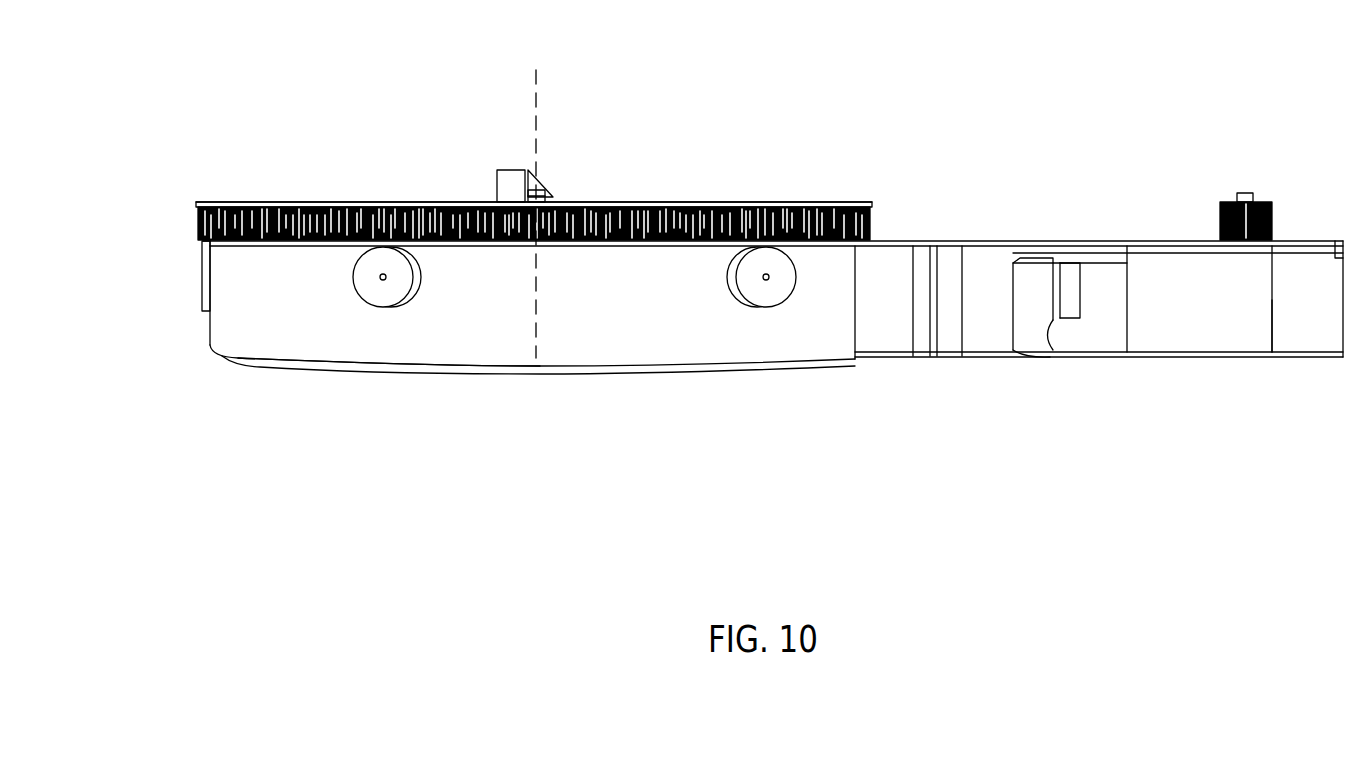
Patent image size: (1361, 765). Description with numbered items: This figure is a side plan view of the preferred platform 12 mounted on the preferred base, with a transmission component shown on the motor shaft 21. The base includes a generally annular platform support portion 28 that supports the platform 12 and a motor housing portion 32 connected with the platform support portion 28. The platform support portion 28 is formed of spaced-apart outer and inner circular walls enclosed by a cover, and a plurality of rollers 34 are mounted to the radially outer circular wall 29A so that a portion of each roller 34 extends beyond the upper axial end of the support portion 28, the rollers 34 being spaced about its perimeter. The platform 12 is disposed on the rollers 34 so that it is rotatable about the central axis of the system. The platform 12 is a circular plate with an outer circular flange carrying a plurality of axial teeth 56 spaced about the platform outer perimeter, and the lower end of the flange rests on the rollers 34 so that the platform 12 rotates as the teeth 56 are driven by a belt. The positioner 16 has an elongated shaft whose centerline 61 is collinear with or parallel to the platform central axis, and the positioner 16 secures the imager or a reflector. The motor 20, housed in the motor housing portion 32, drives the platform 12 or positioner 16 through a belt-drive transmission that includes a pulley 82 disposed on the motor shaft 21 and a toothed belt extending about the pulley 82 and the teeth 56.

The platform 12 is at (295, 183).
The positioner 16 is at (549, 177).
The motor 20 is at (1255, 305).
The motor shaft 21 is at (1247, 192).
The platform support portion 28 is at (670, 394).
The radially outer circular wall 29A is at (486, 346).
The motor housing portion 32 is at (1193, 384).
The rollers 34 is at (200, 285).
The axial teeth 56 is at (358, 210).
The shaft centerline 61 is at (536, 70).
The pulley 82 is at (1272, 215).